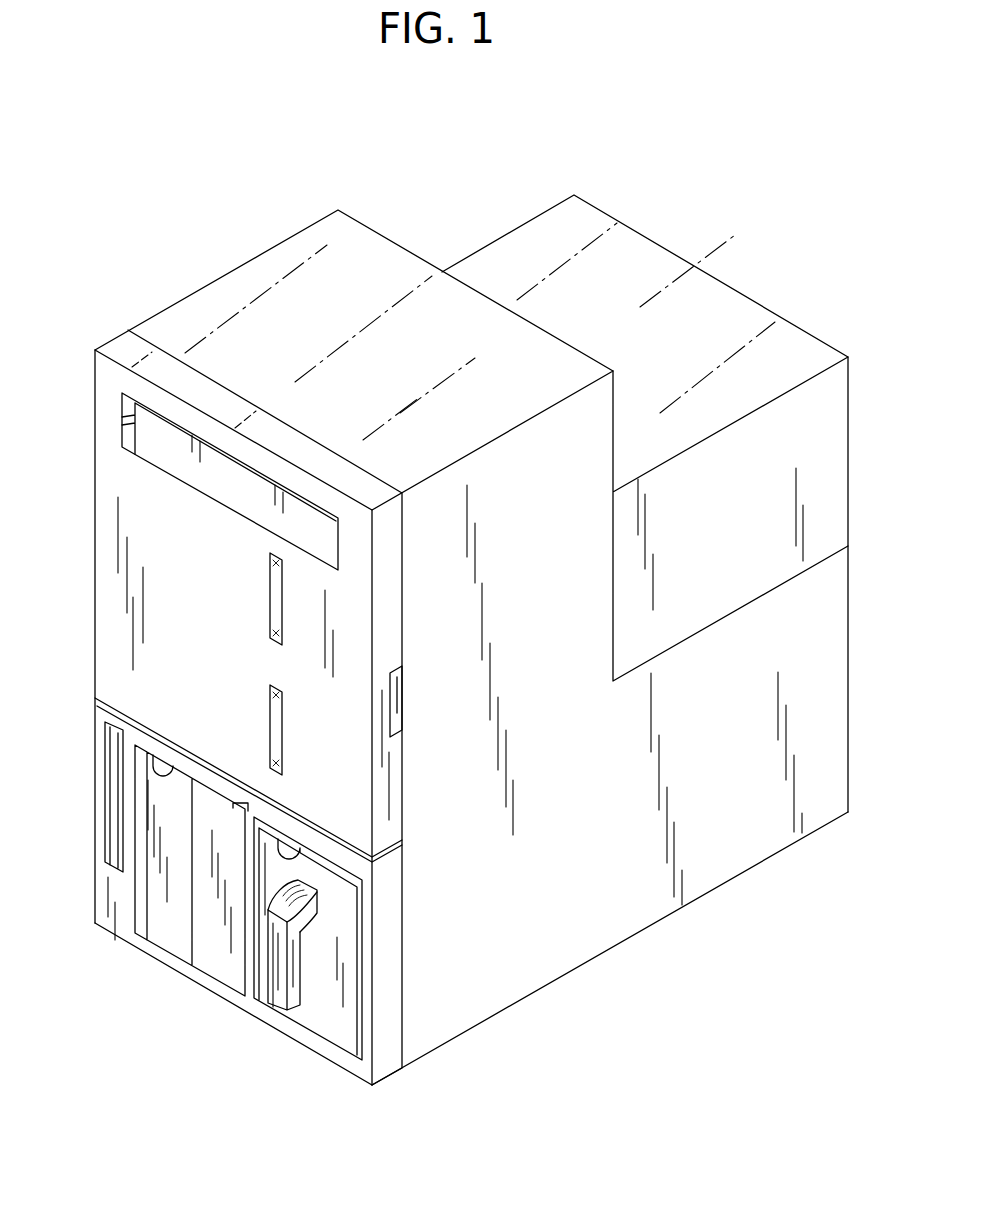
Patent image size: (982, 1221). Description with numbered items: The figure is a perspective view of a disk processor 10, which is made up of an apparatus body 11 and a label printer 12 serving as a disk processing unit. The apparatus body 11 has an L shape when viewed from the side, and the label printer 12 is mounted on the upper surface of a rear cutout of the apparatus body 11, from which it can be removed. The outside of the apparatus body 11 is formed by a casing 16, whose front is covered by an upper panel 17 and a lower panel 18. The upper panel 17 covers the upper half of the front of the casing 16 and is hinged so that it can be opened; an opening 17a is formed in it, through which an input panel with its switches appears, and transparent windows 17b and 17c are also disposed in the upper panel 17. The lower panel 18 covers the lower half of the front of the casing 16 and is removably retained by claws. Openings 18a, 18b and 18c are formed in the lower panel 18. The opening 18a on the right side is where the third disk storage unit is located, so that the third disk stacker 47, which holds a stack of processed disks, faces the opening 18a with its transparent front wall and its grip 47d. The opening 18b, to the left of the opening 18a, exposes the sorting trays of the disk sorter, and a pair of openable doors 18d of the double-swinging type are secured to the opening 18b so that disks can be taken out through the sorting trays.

The disk processor 10 is at (597, 994).
The apparatus body 11 is at (236, 257).
The label printer 12 is at (545, 228).
The casing 16 is at (178, 320).
The upper panel 17 is at (392, 593).
The opening 17a is at (175, 450).
The transparent window 17b is at (273, 603).
The transparent window 17c is at (273, 733).
The lower panel 18 is at (388, 908).
The opening 18a is at (293, 858).
The opening 18b is at (170, 763).
The opening 18c is at (118, 787).
The openable doors 18d is at (160, 925).
The third disk stacker 47 is at (327, 1013).
The grip 47d is at (274, 990).